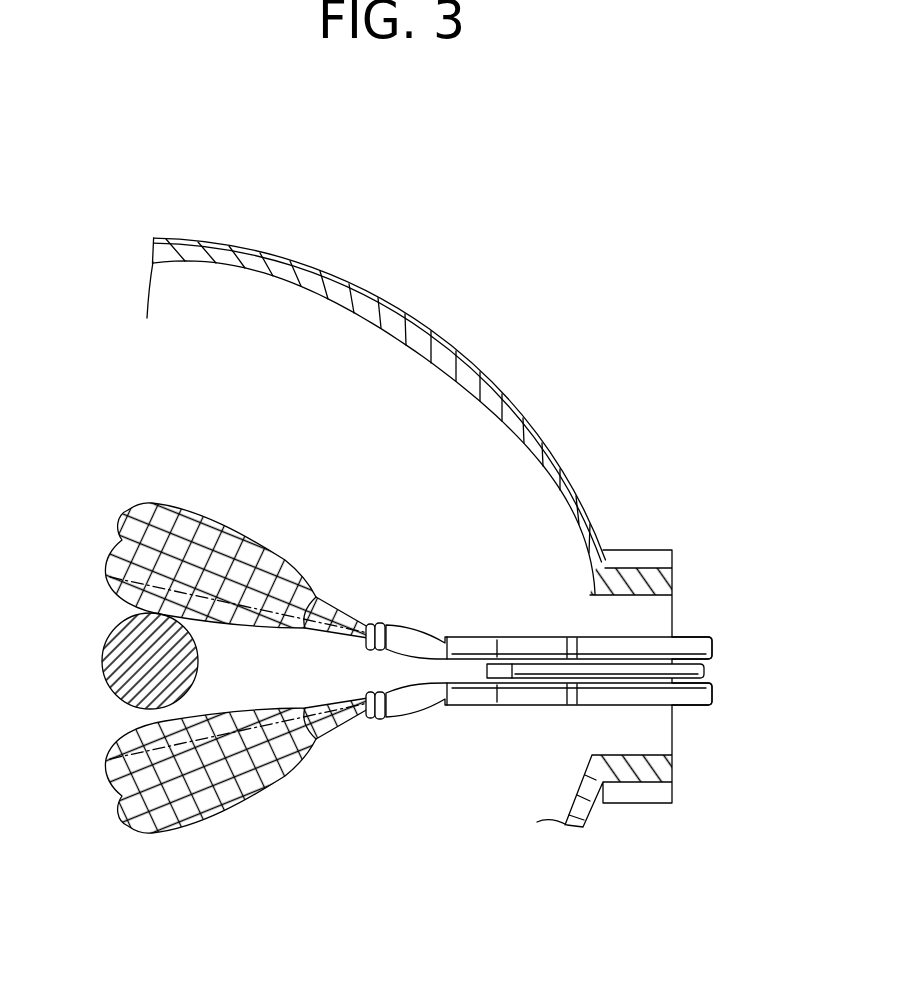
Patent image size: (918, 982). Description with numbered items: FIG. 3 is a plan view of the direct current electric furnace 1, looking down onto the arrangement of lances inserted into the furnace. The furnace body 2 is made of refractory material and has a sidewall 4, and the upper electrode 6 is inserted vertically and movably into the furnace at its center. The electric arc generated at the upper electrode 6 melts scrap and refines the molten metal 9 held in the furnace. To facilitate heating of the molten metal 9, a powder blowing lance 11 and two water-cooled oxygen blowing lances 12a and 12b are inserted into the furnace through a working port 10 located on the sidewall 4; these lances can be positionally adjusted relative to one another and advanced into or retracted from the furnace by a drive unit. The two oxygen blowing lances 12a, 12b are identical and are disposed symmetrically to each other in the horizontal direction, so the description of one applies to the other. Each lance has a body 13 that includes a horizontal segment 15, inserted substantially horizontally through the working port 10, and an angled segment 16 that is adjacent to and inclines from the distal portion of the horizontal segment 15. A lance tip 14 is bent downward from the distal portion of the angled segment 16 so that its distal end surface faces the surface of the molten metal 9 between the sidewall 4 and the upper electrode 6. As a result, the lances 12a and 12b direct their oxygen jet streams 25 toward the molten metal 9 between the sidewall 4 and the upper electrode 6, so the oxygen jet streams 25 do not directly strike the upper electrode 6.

The direct current furnace 1 is at (372, 287).
The furnace body 2 is at (562, 460).
The sidewall 4 is at (512, 407).
The upper electrode 6 is at (103, 648).
The molten metal 9 is at (388, 432).
The working port 10 is at (673, 600).
The powder blowing lance 11 is at (580, 665).
The water-cooled oxygen blowing lance 12a is at (468, 700).
The water-cooled oxygen blowing lance 12b is at (462, 632).
The body 13 is at (548, 632).
The lance tip 14 is at (398, 622).
The horizontal segment 15 is at (650, 638).
The angled segment 16 is at (507, 630).
The oxygen jet stream 25 is at (215, 522).